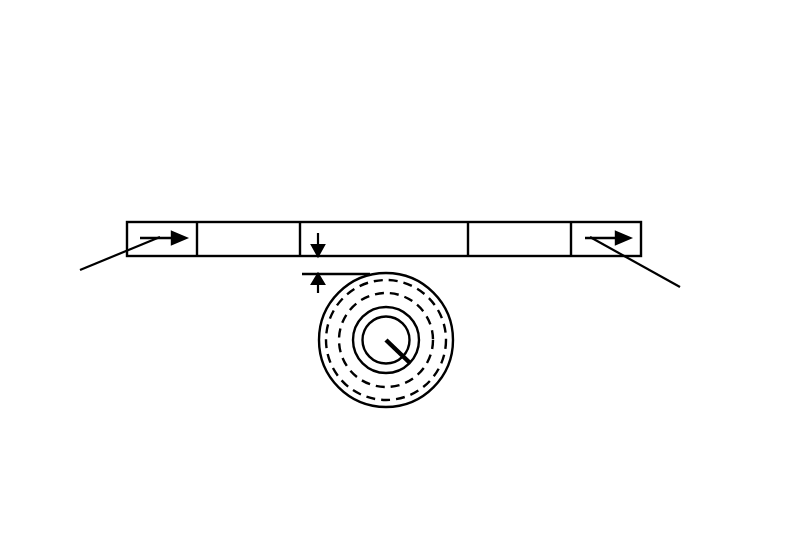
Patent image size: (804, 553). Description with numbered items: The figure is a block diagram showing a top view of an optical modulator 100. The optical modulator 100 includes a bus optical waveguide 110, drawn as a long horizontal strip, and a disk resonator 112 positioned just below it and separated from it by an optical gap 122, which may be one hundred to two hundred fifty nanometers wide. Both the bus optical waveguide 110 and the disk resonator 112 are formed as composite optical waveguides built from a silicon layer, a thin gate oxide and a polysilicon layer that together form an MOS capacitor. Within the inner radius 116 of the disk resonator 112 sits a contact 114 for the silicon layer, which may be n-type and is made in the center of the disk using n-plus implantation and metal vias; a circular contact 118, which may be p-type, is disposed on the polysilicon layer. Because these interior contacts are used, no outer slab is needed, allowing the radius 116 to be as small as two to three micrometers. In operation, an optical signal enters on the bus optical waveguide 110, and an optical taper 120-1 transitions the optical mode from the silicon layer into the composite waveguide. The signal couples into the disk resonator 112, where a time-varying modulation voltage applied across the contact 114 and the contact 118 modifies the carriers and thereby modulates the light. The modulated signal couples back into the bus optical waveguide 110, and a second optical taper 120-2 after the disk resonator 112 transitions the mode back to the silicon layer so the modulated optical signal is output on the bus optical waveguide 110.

The optical modulator 100 is at (217, 72).
The bus optical waveguide 110 is at (590, 222).
The disk resonator 112 is at (453, 357).
The contact 114 is at (392, 336).
The radius 116 is at (405, 354).
The contact 118 is at (357, 380).
The optical taper 120-1 is at (253, 235).
The optical taper 120-2 is at (518, 235).
The optical gap 122 is at (315, 262).